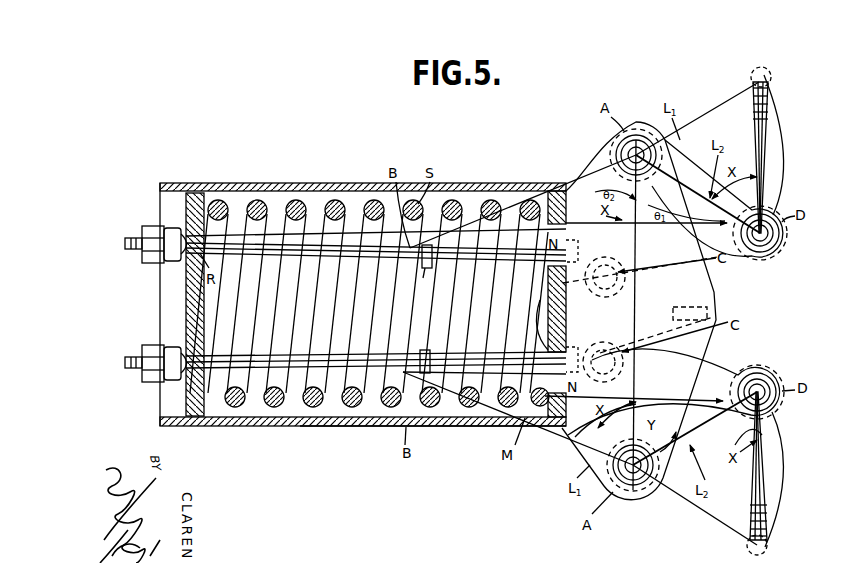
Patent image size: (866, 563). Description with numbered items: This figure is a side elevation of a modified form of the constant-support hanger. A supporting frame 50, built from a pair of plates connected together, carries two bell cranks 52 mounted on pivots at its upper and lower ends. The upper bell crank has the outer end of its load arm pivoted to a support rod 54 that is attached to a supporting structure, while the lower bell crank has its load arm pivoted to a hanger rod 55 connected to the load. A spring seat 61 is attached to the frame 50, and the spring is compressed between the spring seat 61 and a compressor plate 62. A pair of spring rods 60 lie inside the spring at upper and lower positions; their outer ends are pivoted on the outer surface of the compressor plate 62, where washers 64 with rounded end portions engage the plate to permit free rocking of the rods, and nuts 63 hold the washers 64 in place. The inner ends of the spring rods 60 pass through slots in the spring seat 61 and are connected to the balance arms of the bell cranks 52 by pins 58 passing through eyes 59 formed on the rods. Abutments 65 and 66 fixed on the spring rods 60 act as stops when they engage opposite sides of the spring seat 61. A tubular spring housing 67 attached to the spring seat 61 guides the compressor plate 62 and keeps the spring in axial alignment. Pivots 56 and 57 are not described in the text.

The supporting frame 50 is at (716, 292).
The bell cranks 52 is at (778, 258).
The support rod 54 is at (769, 152).
The hanger rod 55 is at (769, 485).
The upper pivot 56 is at (766, 234).
The lower pivot 57 is at (760, 390).
The pins 58 is at (602, 342).
The eyes 59 is at (632, 292).
The spring rods 60 is at (318, 183).
The spring seat 61 is at (545, 428).
The compressor plate 62 is at (198, 417).
The nuts 63 is at (154, 346).
The washers 64 is at (171, 263).
The abutment 65 is at (424, 348).
The abutment 66 is at (547, 326).
The tubular spring housing 67 is at (372, 427).